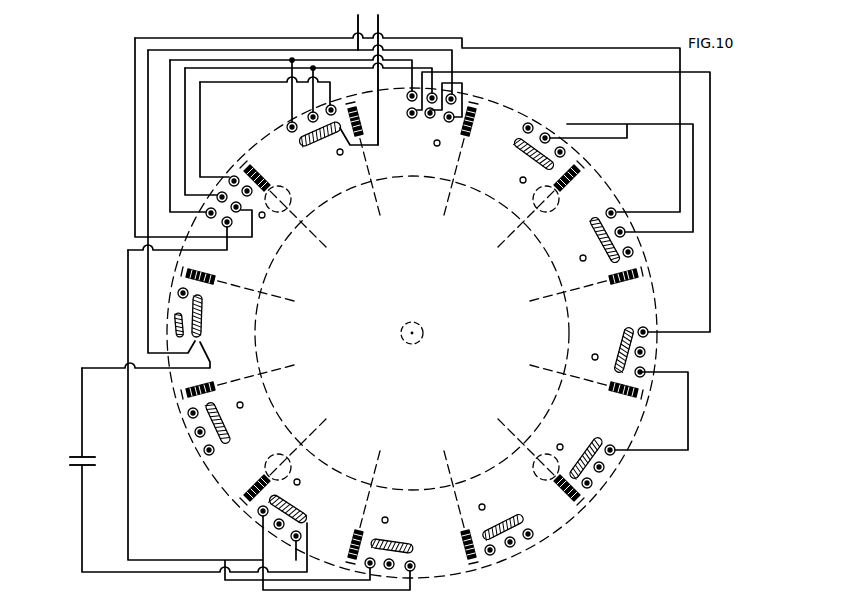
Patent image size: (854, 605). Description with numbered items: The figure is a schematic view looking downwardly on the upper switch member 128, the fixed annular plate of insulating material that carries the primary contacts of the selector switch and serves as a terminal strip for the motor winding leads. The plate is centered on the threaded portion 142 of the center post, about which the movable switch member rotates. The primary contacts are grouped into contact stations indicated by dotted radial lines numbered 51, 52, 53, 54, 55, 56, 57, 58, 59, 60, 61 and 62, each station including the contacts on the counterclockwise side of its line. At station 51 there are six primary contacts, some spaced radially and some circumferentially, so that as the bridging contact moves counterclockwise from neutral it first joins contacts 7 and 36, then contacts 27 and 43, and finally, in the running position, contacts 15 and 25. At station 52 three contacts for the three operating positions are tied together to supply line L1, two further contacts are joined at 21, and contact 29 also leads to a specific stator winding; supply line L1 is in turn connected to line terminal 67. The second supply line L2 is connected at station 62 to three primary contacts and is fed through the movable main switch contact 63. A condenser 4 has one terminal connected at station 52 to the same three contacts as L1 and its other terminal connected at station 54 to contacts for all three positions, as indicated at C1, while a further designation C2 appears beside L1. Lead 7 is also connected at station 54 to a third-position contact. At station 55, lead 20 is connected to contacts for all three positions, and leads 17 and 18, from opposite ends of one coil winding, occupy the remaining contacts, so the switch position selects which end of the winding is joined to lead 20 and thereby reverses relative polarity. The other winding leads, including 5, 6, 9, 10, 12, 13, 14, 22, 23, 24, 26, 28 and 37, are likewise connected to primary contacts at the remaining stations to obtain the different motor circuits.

The condenser 4 is at (67, 461).
The winding lead 5 is at (204, 452).
The winding lead 6 is at (531, 538).
The winding lead 7 is at (250, 194).
The winding lead 9 is at (455, 95).
The winding lead 10 is at (645, 370).
The winding lead 12 is at (618, 346).
The winding lead 13 is at (588, 440).
The winding lead 14 is at (494, 518).
The winding lead 15 is at (229, 227).
The winding lead 17 is at (415, 569).
The winding lead 18 is at (226, 421).
The winding lead 20 is at (388, 540).
The winding lead 21 is at (176, 330).
The winding lead 22 is at (600, 248).
The winding lead 23 is at (428, 118).
The winding lead 24 is at (531, 125).
The winding lead 25 is at (290, 132).
The winding lead 26 is at (410, 118).
The winding lead 27 is at (308, 115).
The winding lead 28 is at (524, 156).
The winding lead 29 is at (178, 292).
The winding lead 36 is at (327, 108).
The winding lead 37 is at (277, 540).
The winding lead 43 is at (239, 210).
The contact station 51 is at (290, 213).
The contact station 52 is at (248, 287).
The contact station 53 is at (248, 376).
The contact station 54 is at (292, 454).
The contact station 55 is at (368, 498).
The contact station 56 is at (456, 498).
The contact station 57 is at (532, 453).
The contact station 58 is at (574, 374).
The contact station 59 is at (574, 287).
The contact station 60 is at (533, 209).
The contact station 61 is at (454, 167).
The contact station 62 is at (368, 167).
The main switch contact 63 is at (380, 26).
The terminal 67 is at (355, 23).
The switch member 128 is at (562, 530).
The threaded portion 142 is at (414, 322).
The supply line L1 is at (203, 318).
The supply line L2 is at (322, 142).
The condenser connection C1 is at (308, 515).
The capacitor C2 is at (250, 332).